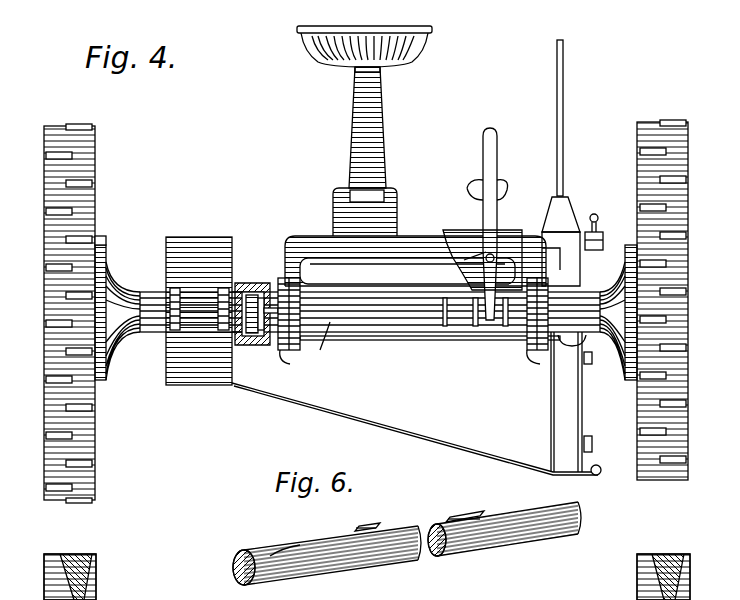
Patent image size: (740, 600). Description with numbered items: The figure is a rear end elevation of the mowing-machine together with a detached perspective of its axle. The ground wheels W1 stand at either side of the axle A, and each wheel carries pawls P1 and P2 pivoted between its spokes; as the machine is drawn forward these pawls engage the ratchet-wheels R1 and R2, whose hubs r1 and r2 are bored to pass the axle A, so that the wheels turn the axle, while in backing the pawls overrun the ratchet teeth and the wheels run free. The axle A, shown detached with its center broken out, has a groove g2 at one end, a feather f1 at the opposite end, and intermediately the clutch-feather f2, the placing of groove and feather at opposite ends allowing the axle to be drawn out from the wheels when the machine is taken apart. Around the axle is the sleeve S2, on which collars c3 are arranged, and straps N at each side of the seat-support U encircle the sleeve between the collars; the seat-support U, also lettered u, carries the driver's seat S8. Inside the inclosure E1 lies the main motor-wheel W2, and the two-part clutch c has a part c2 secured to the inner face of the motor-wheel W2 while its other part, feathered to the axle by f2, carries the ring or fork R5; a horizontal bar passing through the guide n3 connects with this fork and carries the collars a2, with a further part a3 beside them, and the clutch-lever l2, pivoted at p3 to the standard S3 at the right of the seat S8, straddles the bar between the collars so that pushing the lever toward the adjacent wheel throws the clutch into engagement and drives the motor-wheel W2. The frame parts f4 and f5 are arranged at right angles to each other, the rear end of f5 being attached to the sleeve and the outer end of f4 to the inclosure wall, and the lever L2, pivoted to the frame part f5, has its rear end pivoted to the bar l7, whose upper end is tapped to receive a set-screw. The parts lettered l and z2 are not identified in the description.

In FIG. 4, the wheels W1 is at (108, 165).
In FIG. 4, the main motor-wheel W2 is at (688, 245).
In FIG. 4, the pawls P1 is at (104, 245).
In FIG. 4, the ratchet-wheel R1 is at (104, 264).
In FIG. 4, the hub r1 is at (128, 292).
In FIG. 4, the inclosure E1 is at (199, 311).
In FIG. 4, the clutch part c2 is at (244, 286).
In FIG. 4, the two-part clutch c is at (259, 292).
In FIG. 4, the clutch lever pin l is at (271, 288).
In FIG. 4, the strap N is at (300, 282).
In FIG. 4, the seat-support U is at (415, 261).
In FIG. 4, the seat-support u is at (365, 151).
In FIG. 4, the seat S8 is at (372, 46).
In FIG. 4, the clutch-lever l2 is at (492, 168).
In FIG. 4, the lever L2 is at (563, 132).
In FIG. 4, the standard S3 is at (482, 260).
In FIG. 4, the pivot p3 is at (466, 263).
In FIG. 4, the ratchet-wheel R2 is at (603, 244).
In FIG. 4, the hub r2 is at (606, 290).
In FIG. 4, the pawls P2 is at (636, 316).
In FIG. 4, the ring or fork R5 is at (262, 345).
In FIG. 4, the collars c3 is at (408, 352).
In FIG. 4, the shaft sleeve z2 is at (323, 339).
In FIG. 4, the sleeve S2 is at (360, 338).
In FIG. 4, the guide n3 is at (446, 340).
In FIG. 4, the collars a2 is at (476, 340).
In FIG. 4, the pin a3 is at (505, 340).
In FIG. 4, the bar l7 is at (584, 350).
In FIG. 4, the frame part f5 is at (553, 396).
In FIG. 4, the frame part f4 is at (370, 424).
In FIG. 6, the axle A is at (338, 564).
In FIG. 6, the clutch-feather f2 is at (360, 528).
In FIG. 6, the groove g2 is at (285, 542).
In FIG. 6, the feather f1 is at (466, 516).